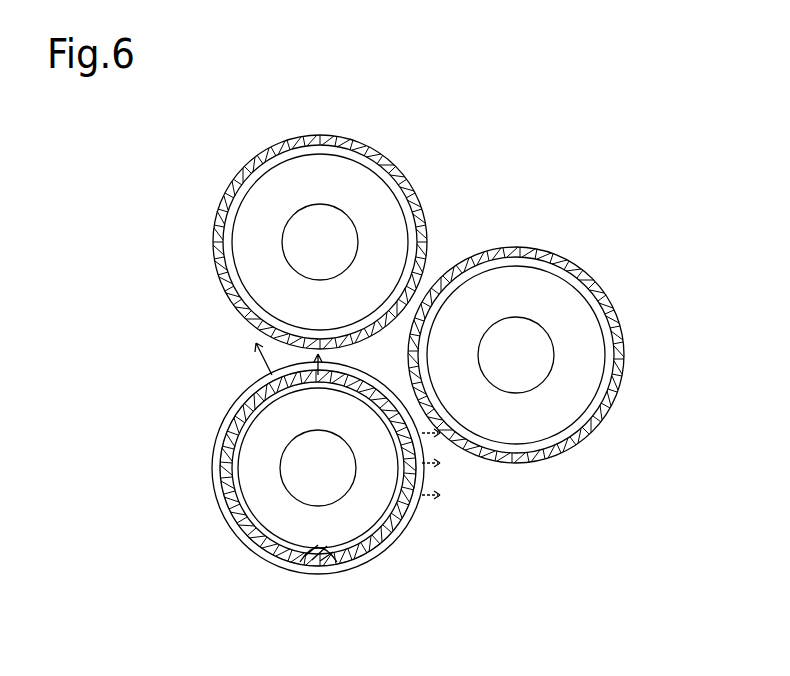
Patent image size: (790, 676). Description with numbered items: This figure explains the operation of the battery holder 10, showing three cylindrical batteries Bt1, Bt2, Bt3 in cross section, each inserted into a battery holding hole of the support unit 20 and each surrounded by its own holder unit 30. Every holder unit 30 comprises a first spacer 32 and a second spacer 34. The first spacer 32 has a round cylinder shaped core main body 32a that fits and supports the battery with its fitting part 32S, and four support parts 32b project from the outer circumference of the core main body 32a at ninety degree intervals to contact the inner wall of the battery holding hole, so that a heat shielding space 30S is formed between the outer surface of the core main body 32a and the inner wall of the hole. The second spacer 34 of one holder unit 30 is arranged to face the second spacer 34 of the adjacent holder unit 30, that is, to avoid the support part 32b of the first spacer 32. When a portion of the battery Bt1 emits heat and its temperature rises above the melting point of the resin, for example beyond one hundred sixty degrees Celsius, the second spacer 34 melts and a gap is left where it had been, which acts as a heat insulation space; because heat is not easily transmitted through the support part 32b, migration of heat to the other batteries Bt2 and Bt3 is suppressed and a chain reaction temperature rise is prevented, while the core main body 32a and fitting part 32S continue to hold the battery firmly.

The battery holder 10 is at (452, 155).
The support unit 20 is at (104, 284).
The holder unit 30 is at (250, 311).
The first spacer 32 is at (107, 418).
The second spacer 34 is at (258, 376).
The core main body 32a is at (240, 437).
The support part 32b is at (260, 398).
The heat shielding space 30S is at (256, 381).
The fitting part 32S is at (328, 550).
The battery Bt1 is at (250, 490).
The battery Bt2 is at (368, 208).
The battery Bt3 is at (587, 380).